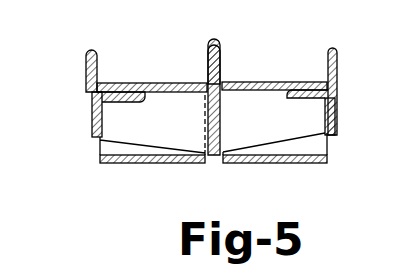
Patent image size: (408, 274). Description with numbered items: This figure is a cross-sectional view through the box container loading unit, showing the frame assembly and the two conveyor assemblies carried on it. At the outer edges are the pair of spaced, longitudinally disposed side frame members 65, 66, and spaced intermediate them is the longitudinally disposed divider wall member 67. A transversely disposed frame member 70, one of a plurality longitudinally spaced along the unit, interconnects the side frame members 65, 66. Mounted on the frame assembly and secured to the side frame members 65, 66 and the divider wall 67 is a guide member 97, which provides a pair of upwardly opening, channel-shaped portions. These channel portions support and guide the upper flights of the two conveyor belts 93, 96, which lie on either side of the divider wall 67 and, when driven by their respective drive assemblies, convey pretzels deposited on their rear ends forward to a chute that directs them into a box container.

The side frame member 65 is at (92, 124).
The side frame member 66 is at (338, 118).
The divider wall member 67 is at (222, 122).
The transversely disposed frame member 70 is at (136, 133).
The conveyor belt 93 is at (162, 84).
The conveyor belt 96 is at (280, 82).
The guide member 97 is at (222, 46).